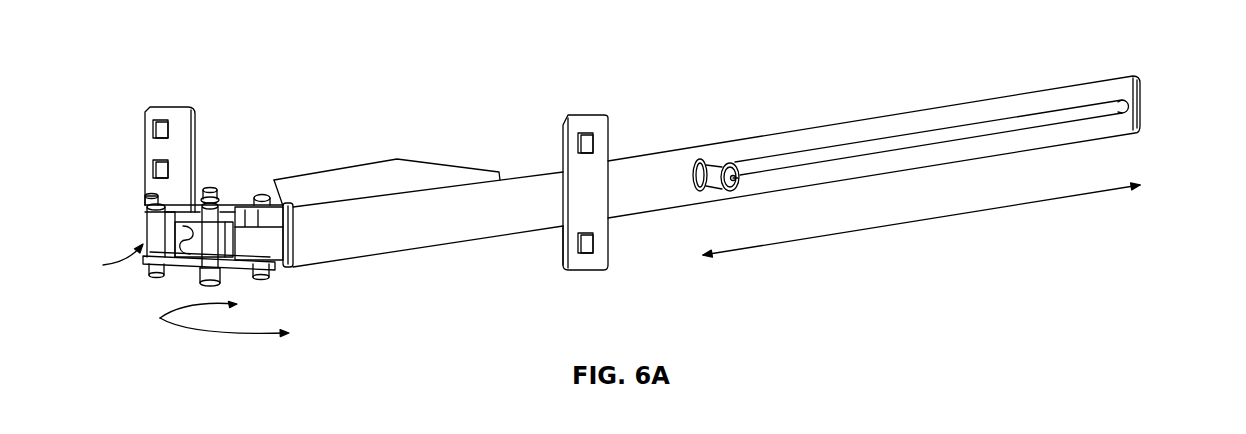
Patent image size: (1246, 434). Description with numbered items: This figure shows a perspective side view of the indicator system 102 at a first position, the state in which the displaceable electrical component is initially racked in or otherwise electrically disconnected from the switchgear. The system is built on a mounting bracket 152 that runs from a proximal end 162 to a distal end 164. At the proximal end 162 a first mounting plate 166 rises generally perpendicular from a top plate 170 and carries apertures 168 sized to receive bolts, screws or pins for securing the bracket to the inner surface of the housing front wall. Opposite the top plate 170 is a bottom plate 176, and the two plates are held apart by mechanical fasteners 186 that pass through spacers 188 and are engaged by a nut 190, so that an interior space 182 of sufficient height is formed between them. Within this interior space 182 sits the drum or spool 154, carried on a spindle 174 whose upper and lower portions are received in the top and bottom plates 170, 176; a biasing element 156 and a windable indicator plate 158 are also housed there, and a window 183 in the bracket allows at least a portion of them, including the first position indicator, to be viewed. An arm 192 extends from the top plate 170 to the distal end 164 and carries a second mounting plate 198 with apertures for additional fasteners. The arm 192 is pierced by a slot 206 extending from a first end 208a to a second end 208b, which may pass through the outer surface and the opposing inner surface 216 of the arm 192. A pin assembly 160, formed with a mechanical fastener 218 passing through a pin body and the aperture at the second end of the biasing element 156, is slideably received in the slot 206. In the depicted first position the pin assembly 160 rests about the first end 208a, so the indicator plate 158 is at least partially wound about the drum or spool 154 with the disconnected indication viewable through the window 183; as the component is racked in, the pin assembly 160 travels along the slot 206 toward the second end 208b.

The indicator system 102 is at (932, 73).
The mounting bracket 152 is at (672, 160).
The drum or spool 154 is at (178, 217).
The biasing element 156 is at (280, 247).
The windable indicator plate 158 is at (192, 257).
The pin assembly 160 is at (713, 187).
The proximal end 162 is at (150, 188).
The distal end 164 is at (1142, 107).
The first mounting plate 166 is at (185, 137).
The apertures 168 is at (152, 168).
The top plate 170 is at (398, 168).
The spindle 174 is at (218, 205).
The bottom plate 176 is at (247, 273).
The interior space 182 is at (100, 260).
The window 183 is at (195, 258).
The mechanical fasteners 186 is at (207, 187).
The spacer 188 is at (148, 210).
The nut 190 is at (147, 260).
The arm 192 is at (615, 173).
The second mounting plate 198 is at (578, 121).
The slot 206 is at (893, 150).
The first end of the slot 208a is at (693, 177).
The second end of the slot 208b is at (1123, 87).
The inner surface 216 is at (932, 163).
The mechanical fastener 218 is at (740, 183).